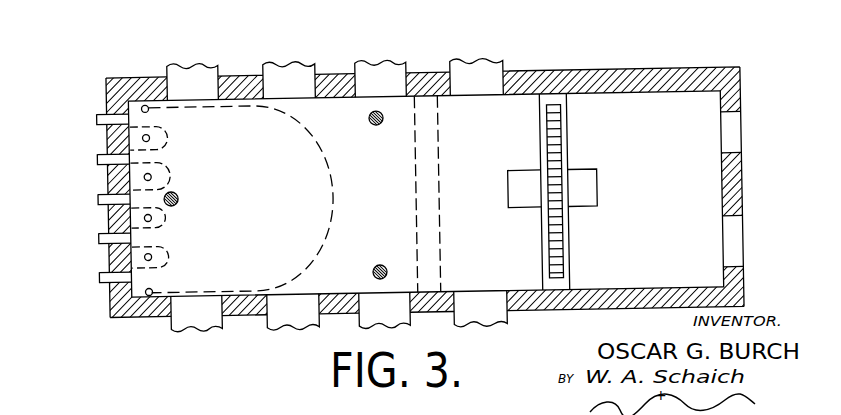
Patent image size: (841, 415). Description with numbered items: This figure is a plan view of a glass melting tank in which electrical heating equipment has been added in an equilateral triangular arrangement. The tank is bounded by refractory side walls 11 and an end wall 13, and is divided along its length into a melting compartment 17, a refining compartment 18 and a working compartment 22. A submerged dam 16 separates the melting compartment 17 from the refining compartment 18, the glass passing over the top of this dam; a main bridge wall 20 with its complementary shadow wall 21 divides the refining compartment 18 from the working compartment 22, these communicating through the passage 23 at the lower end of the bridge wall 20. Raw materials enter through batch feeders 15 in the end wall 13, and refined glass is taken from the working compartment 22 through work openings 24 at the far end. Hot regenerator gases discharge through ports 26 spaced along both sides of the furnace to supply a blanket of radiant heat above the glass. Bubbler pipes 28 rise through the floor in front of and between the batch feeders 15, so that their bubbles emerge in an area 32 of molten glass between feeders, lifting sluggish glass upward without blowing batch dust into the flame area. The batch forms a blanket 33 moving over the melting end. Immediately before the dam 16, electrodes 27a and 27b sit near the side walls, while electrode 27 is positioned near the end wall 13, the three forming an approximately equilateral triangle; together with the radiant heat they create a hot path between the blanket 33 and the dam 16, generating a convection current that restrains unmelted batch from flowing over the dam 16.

The side walls 11 is at (550, 60).
The end wall 13 is at (109, 98).
The batch feeders 15 is at (106, 190).
The submerged dam 16 is at (441, 158).
The melting compartment 17 is at (250, 218).
The refining compartment 18 is at (488, 214).
The main bridge wall 20 is at (571, 126).
The shadow wall 21 is at (557, 158).
The working compartment 22 is at (643, 240).
The passage 23 is at (596, 190).
The work openings 24 is at (734, 252).
The ports 26 is at (305, 70).
The electrode 27 is at (179, 195).
The electrode 27a is at (376, 264).
The electrode 27b is at (370, 118).
The bubbler pipes 28 is at (149, 249).
The area of molten glass 32 is at (157, 167).
The blanket of batch 33 is at (328, 208).